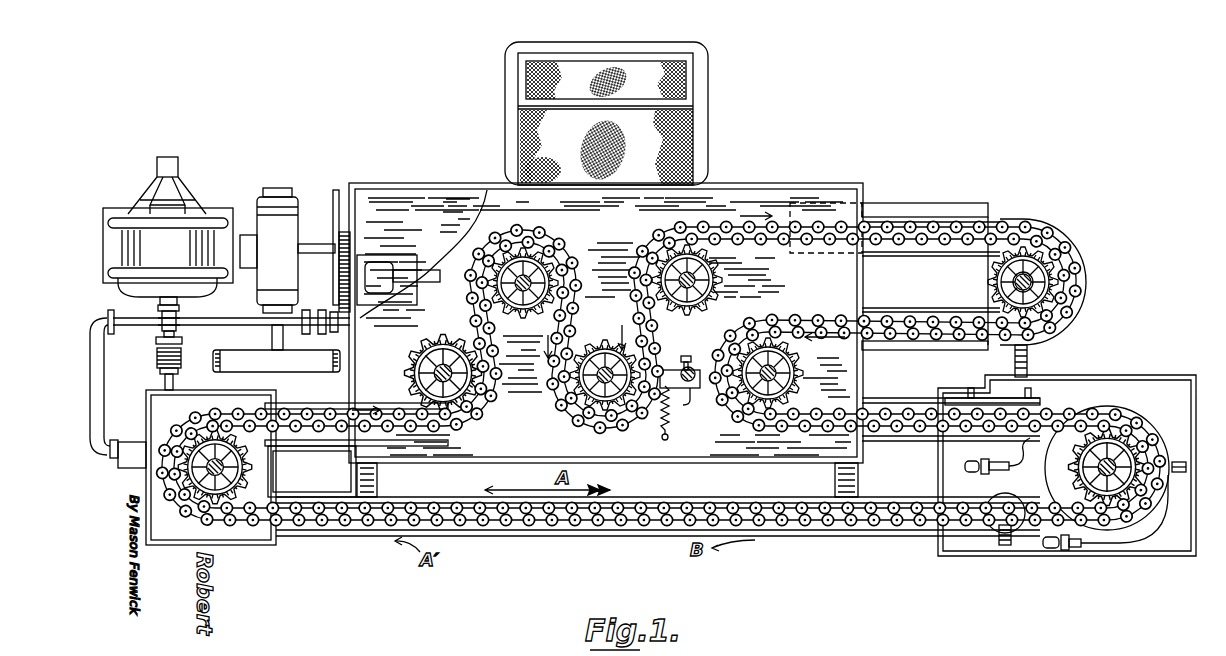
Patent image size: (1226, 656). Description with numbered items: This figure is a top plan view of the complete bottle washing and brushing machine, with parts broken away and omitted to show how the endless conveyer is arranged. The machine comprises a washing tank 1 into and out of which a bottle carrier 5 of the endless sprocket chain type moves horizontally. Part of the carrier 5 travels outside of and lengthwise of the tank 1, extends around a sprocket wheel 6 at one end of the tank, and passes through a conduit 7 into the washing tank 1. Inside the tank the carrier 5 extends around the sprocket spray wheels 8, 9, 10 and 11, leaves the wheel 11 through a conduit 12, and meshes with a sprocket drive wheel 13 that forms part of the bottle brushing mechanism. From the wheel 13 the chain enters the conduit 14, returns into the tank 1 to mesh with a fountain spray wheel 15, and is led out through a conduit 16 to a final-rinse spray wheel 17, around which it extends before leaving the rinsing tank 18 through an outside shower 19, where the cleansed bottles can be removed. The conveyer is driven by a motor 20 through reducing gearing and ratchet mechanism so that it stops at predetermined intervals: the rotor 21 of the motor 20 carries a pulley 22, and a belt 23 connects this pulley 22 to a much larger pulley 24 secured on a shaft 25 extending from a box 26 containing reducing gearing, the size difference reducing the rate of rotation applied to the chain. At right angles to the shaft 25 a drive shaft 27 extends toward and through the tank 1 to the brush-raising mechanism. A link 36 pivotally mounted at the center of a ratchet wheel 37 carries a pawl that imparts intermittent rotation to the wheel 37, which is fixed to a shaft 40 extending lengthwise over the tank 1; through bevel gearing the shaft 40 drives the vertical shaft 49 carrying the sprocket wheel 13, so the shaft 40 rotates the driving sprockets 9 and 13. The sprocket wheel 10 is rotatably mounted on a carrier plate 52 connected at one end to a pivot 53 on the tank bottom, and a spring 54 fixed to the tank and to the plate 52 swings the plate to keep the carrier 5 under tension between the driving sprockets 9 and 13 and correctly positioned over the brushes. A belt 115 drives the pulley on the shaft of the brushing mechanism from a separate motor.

The washing tank 1 is at (488, 205).
The bottle carrier 5 is at (559, 523).
The sprocket wheel 6 is at (222, 440).
The conduit 7 is at (318, 446).
The sprocket spray wheel 8 is at (406, 378).
The sprocket spray wheel 9 is at (540, 248).
The sprocket spray wheel 10 is at (573, 402).
The sprocket spray wheel 11 is at (683, 234).
The conduit 12 is at (898, 206).
The sprocket drive wheel 13 is at (1035, 232).
The conduit 14 is at (911, 338).
The fountain spray wheel 15 is at (752, 412).
The conduit 16 is at (888, 440).
The final-rinse spray wheel 17 is at (1075, 466).
The rinsing tank 18 is at (1192, 507).
The outside shower 19 is at (1000, 530).
The motor 20 is at (117, 210).
The rotor 21 is at (178, 320).
The pulley 22 is at (157, 342).
The belt 23 is at (157, 360).
The large pulley 24 is at (253, 351).
The shaft 25 is at (284, 342).
The box 26 is at (258, 198).
The drive shaft 27 is at (316, 246).
The link 36 is at (337, 190).
The ratchet wheel 37 is at (351, 243).
The shaft 40 is at (438, 269).
The vertical shaft 49 is at (1050, 276).
The carrier plate 52 is at (692, 392).
The pivot 53 is at (692, 368).
The spring 54 is at (660, 424).
The belt 115 is at (1027, 360).